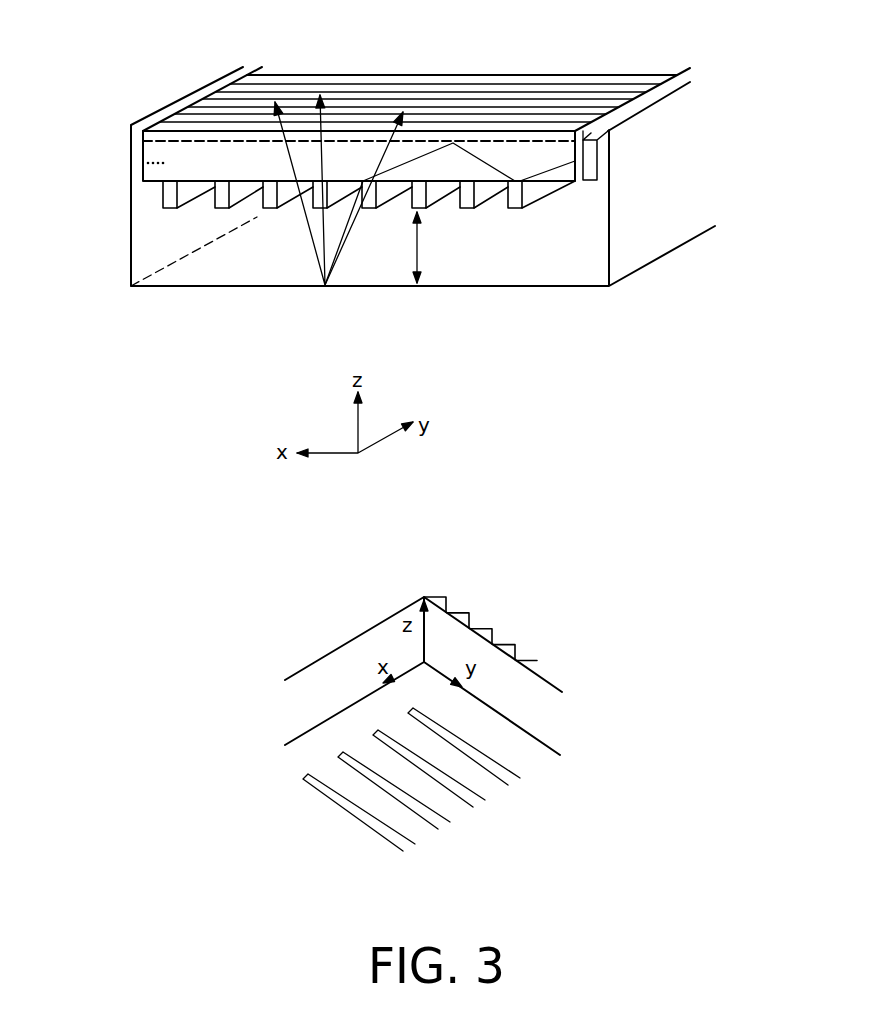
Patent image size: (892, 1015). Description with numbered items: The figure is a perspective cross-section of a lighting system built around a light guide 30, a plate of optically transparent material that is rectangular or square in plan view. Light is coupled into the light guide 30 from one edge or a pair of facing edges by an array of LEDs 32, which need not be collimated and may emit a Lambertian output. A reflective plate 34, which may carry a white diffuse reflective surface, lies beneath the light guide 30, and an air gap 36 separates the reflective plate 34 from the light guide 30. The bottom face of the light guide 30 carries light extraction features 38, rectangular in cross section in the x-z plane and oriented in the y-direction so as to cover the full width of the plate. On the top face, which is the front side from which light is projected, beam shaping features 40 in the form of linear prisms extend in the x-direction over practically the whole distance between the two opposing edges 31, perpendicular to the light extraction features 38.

The light guide 30 is at (131, 148).
The opposing edges 31 is at (143, 162).
The array of LEDs 32 is at (593, 135).
The reflective plate 34 is at (560, 287).
The air gap 36 is at (417, 243).
The light extraction features 38 is at (218, 208).
The beam shaping features 40 is at (465, 132).